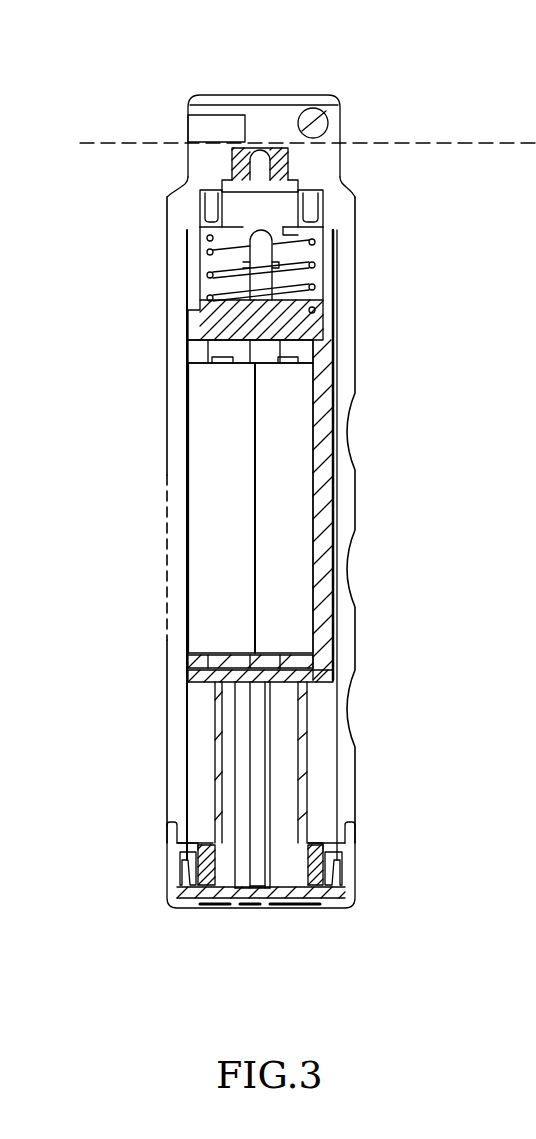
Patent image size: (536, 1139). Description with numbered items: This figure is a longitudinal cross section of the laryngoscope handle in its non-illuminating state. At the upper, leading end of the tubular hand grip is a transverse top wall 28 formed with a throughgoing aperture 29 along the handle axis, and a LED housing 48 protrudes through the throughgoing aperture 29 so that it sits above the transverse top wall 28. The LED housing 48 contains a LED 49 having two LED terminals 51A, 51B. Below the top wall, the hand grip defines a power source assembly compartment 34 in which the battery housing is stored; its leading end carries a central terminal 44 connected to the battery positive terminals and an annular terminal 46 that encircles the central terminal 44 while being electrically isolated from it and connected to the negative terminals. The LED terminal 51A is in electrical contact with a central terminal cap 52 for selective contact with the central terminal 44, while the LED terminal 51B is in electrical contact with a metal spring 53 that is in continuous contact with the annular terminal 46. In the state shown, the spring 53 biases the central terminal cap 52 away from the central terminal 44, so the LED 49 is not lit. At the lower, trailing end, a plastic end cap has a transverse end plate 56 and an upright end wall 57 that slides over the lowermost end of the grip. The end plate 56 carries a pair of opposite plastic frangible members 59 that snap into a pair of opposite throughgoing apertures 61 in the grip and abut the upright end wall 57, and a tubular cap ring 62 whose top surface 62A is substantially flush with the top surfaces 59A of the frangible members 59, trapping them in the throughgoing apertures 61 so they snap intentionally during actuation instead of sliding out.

The transverse top wall 28 is at (323, 170).
The throughgoing aperture 29 is at (228, 143).
The power source assembly compartment 34 is at (187, 467).
The central terminal 44 is at (262, 287).
The annular terminal 46 is at (315, 330).
The LED housing 48 is at (279, 162).
The LED 49 is at (266, 148).
The LED terminal 51A is at (210, 203).
The LED terminal 51B is at (315, 205).
The central terminal cap 52 is at (210, 237).
The metal spring 53 is at (315, 295).
The transverse end plate 56 is at (282, 910).
The upright end wall 57 is at (357, 883).
The frangible members 59 is at (190, 870).
The top surfaces of frangible members 59A is at (190, 843).
The throughgoing apertures 61 is at (177, 852).
The tubular cap ring 62 is at (310, 887).
The top surface of cap ring 62A is at (313, 847).